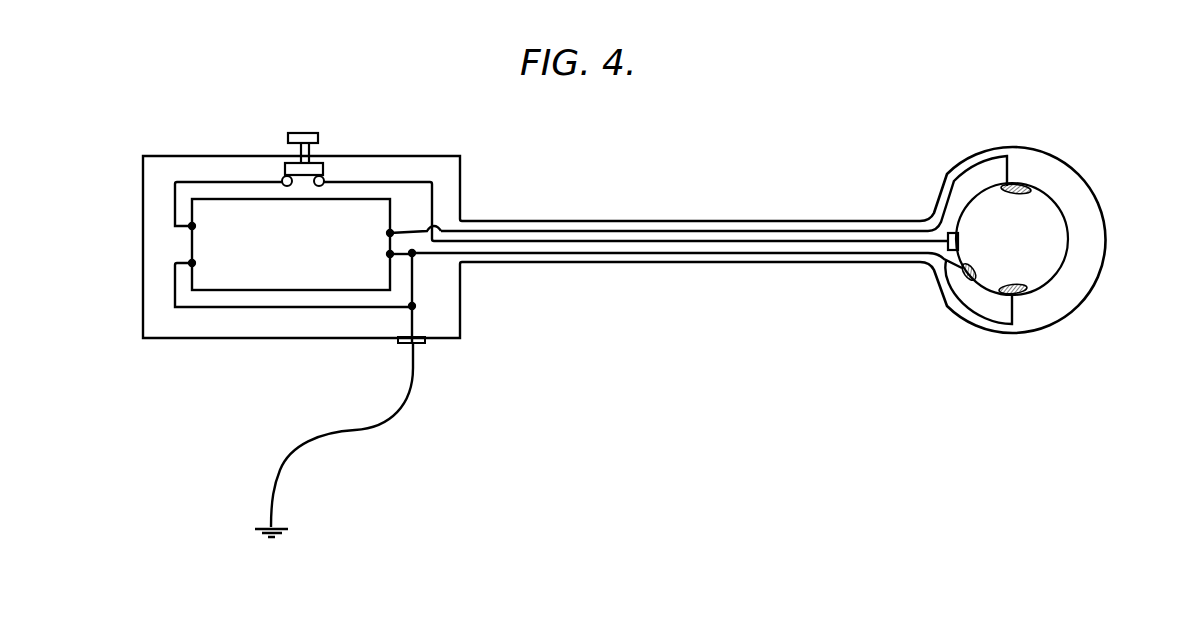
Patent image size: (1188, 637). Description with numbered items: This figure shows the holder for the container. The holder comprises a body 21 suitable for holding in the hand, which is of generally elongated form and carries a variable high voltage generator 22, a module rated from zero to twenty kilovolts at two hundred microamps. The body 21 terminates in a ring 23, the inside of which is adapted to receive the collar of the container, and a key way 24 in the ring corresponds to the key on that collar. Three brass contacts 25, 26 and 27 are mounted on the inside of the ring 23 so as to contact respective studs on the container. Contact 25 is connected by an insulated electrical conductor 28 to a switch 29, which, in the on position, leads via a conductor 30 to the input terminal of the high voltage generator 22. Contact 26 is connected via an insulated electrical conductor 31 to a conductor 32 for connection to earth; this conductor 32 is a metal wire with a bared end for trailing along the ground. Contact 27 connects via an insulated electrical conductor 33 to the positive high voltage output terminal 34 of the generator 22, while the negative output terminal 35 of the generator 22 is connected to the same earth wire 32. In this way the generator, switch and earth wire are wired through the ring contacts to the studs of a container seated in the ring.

The body 21 is at (462, 178).
The variable high voltage generator 22 is at (208, 242).
The ring 23 is at (1107, 220).
The key way 24 is at (956, 242).
The brass contact 25 is at (977, 272).
The brass contact 26 is at (1027, 288).
The brass contact 27 is at (1030, 189).
The insulated electrical conductor 28 is at (680, 240).
The switch 29 is at (318, 138).
The conductor 30 is at (176, 193).
The insulated electrical conductor 31 is at (743, 252).
The earth conductor 32 is at (370, 428).
The insulated electrical conductor 33 is at (630, 229).
The positive high voltage output terminal 34 is at (390, 233).
The negative output terminal 35 is at (390, 254).